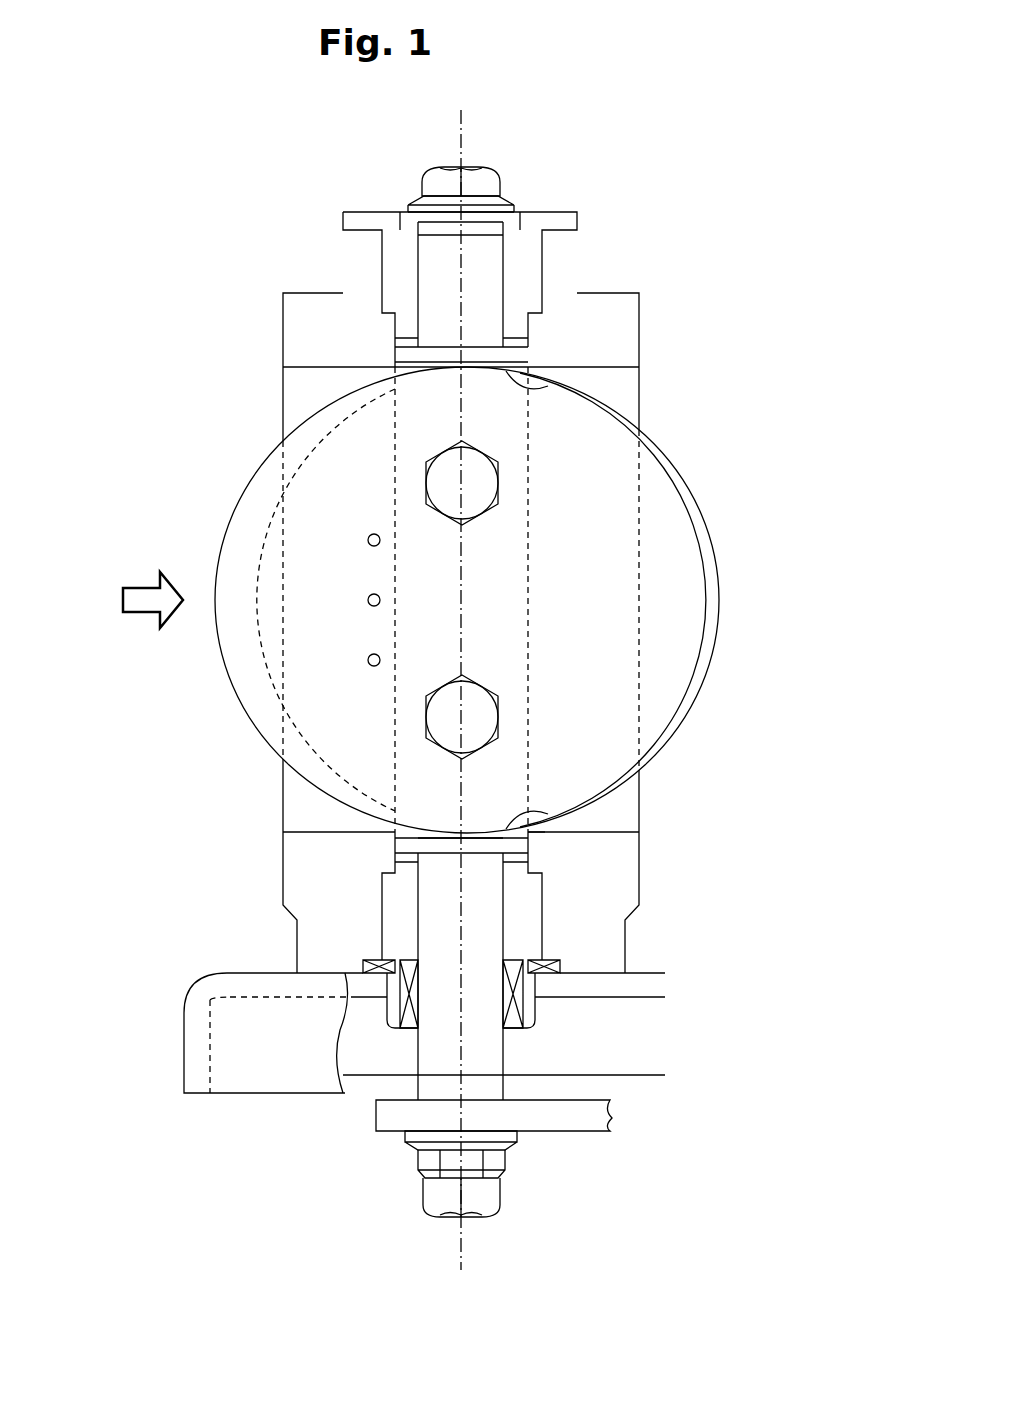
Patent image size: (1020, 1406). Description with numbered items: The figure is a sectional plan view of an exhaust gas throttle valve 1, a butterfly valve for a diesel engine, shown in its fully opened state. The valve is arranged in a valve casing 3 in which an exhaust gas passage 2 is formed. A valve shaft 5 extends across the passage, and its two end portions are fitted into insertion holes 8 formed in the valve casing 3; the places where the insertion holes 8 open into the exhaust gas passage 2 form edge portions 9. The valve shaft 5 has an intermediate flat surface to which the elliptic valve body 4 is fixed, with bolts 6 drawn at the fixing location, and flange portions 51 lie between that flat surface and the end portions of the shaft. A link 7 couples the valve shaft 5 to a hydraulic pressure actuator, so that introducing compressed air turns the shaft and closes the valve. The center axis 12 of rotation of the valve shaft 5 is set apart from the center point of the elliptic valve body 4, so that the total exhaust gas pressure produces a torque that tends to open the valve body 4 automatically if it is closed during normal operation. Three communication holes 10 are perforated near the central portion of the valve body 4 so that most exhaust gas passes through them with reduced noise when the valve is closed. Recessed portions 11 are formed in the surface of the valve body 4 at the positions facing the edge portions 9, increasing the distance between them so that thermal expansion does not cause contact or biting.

The exhaust gas throttle valve 1 is at (610, 242).
The exhaust gas passage 2 is at (608, 377).
The valve casing 3 is at (615, 317).
The valve body 4 is at (690, 569).
The valve shaft 5 is at (497, 910).
The disc fastening bolts 6 is at (483, 484).
The link 7 is at (556, 1122).
The insertion holes 8 is at (395, 843).
The edge portions 9 is at (531, 836).
The communication holes 10 is at (368, 538).
The recessed portions 11 is at (534, 390).
The center axis of rotation 12 is at (470, 592).
The flange portions 51 is at (433, 846).